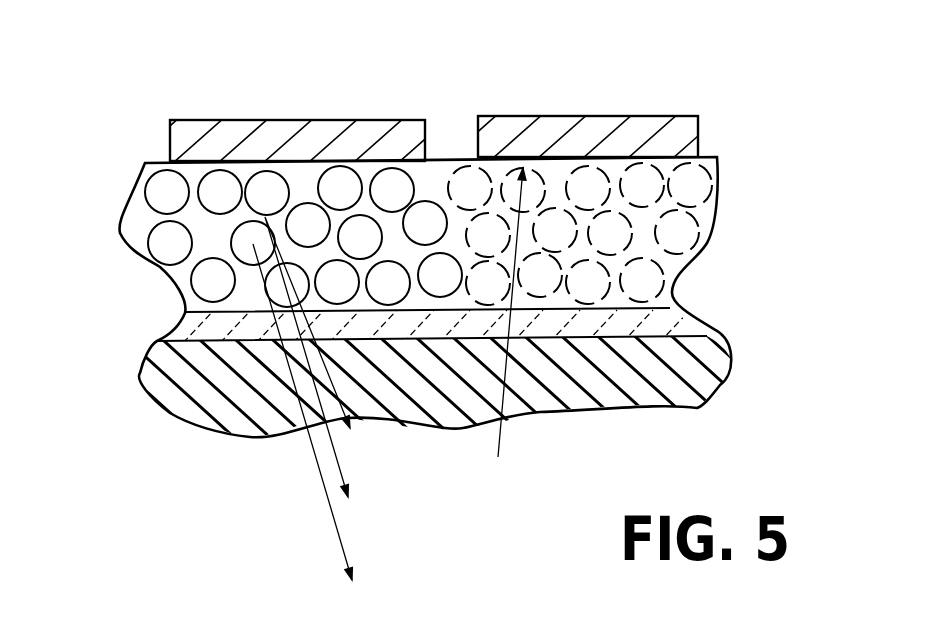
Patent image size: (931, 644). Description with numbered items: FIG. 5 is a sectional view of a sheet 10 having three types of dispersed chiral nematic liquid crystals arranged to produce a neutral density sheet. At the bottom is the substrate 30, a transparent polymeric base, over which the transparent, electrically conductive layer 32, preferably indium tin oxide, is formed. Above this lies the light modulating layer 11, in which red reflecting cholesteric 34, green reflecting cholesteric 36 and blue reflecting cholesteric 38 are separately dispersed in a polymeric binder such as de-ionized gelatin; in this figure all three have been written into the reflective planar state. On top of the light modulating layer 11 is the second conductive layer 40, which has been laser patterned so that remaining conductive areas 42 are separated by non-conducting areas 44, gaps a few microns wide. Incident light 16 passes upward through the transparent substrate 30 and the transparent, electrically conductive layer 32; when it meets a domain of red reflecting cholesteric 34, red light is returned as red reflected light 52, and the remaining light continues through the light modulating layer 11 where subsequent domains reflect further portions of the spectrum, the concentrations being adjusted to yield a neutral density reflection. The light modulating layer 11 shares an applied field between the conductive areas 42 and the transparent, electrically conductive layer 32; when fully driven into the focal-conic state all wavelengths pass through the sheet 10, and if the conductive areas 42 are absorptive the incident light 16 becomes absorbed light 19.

The sheet 10 is at (453, 315).
The light modulating layer 11 is at (453, 326).
The incident light 16 is at (265, 217).
The absorbed light 19 is at (504, 334).
The substrate 30 is at (150, 388).
The transparent, electrically conductive layer 32 is at (170, 327).
The red reflecting cholesteric 34 is at (264, 326).
The green reflecting cholesteric 36 is at (690, 312).
The blue reflecting cholesteric 38 is at (157, 181).
The second conductive layer 40 is at (474, 99).
The conductive areas 42 is at (225, 130).
The non-conducting areas 44 is at (453, 127).
The red reflected light 52 is at (315, 417).